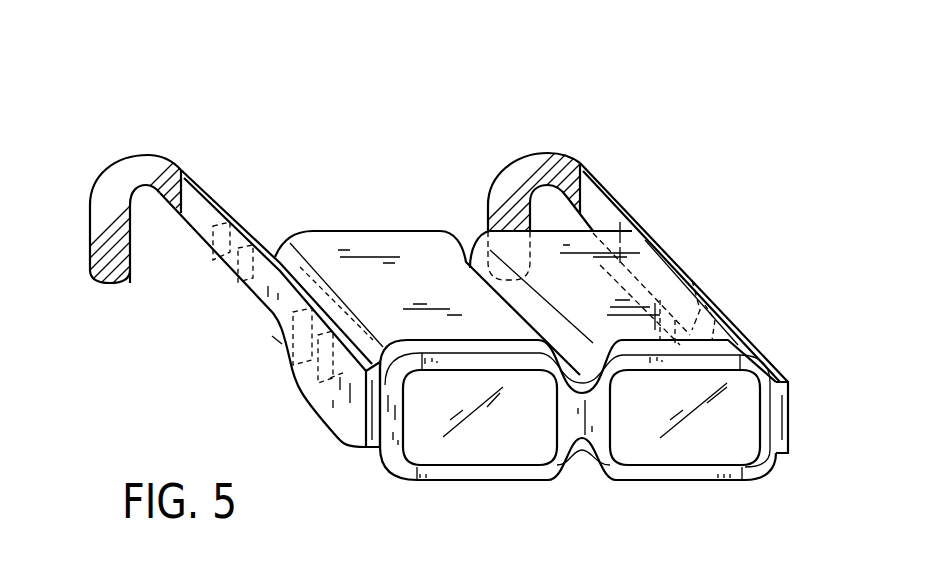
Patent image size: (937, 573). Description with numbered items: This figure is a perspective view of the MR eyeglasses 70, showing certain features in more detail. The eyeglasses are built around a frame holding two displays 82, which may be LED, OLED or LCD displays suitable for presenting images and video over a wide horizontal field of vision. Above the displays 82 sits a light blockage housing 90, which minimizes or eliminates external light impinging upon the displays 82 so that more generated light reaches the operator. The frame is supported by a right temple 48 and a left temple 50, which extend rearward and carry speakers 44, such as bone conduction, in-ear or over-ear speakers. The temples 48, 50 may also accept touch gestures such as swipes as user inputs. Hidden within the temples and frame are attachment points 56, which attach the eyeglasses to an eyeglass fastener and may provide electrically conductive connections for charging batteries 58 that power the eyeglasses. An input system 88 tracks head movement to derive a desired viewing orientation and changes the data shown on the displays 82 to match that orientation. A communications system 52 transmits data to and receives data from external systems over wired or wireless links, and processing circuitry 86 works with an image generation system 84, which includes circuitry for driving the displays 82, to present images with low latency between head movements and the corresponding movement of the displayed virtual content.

The MR eyeglasses 70 is at (102, 66).
The speakers 44 is at (125, 175).
The left temple 50 is at (612, 193).
The light blockage housing 90 is at (393, 299).
The right temple 48 is at (333, 417).
The image generation system 84 is at (383, 430).
The displays 82 is at (490, 442).
The attachment points 56 is at (227, 248).
The batteries 58 is at (297, 330).
The input system 88 is at (330, 378).
The communications system 52 is at (692, 280).
The processing circuitry 86 is at (715, 305).